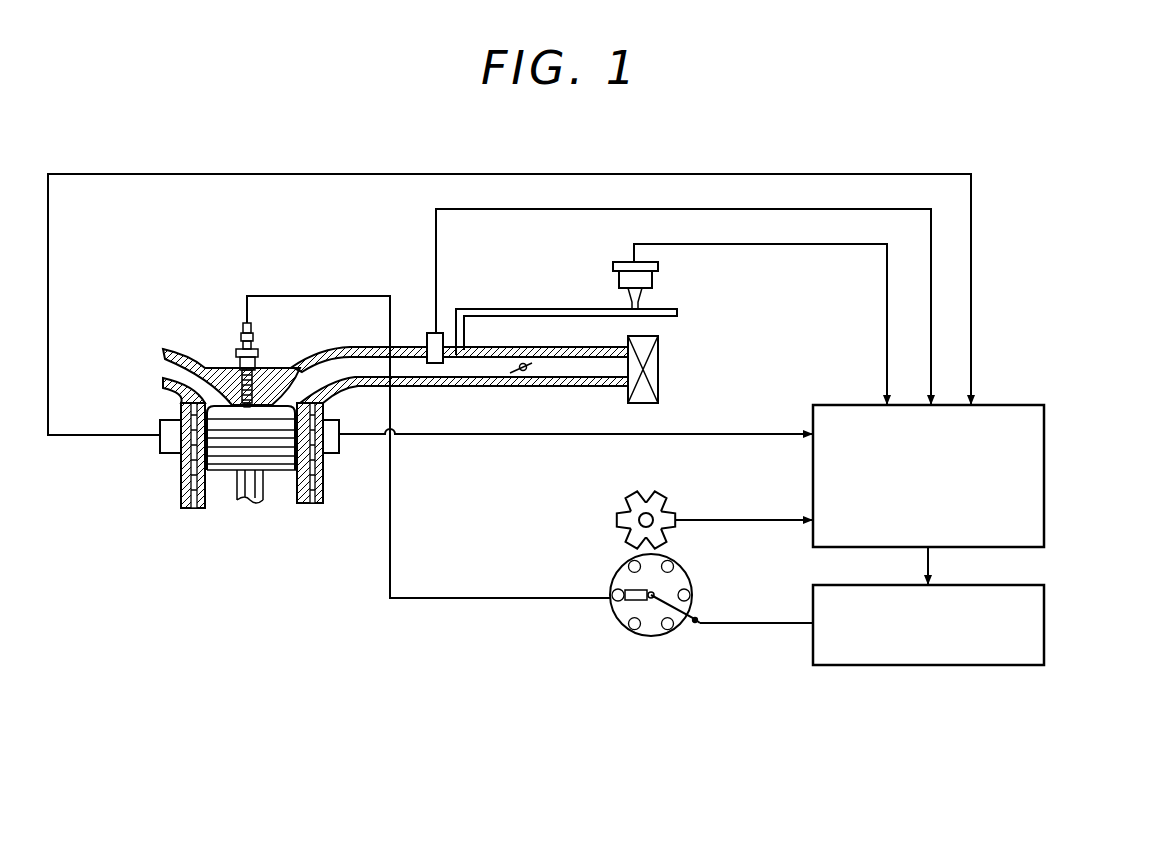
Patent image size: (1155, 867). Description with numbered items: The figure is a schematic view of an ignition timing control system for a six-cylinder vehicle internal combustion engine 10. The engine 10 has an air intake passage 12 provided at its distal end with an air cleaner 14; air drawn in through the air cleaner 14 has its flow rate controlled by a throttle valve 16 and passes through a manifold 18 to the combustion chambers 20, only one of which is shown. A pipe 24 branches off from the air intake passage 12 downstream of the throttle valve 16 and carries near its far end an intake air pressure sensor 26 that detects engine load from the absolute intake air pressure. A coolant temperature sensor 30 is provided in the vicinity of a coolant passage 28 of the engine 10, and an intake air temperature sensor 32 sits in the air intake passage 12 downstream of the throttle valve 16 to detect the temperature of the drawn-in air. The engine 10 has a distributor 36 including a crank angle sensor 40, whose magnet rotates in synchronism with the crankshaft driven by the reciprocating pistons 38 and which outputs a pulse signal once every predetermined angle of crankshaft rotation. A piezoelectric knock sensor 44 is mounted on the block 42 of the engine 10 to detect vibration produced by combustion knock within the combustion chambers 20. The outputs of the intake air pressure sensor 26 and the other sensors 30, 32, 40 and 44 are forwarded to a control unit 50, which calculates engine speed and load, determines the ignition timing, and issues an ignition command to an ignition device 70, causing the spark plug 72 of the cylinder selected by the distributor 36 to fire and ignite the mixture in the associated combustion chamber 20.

The internal combustion engine 10 is at (175, 406).
The air intake passage 12 is at (477, 386).
The air cleaner 14 is at (660, 386).
The throttle valve 16 is at (535, 371).
The manifold 18 is at (314, 358).
The combustion chamber 20 is at (245, 415).
The pipe 24 is at (527, 308).
The intake air pressure sensor 26 is at (616, 262).
The coolant passage 28 is at (325, 496).
The coolant temperature sensor 30 is at (328, 440).
The intake air temperature sensor 32 is at (427, 340).
The distributor 36 is at (617, 610).
The piston 38 is at (285, 477).
The crank angle sensor 40 is at (626, 530).
The block 42 is at (170, 395).
The knock sensor 44 is at (167, 450).
The control unit 50 is at (1044, 452).
The ignition device 70 is at (935, 665).
The spark plug 72 is at (243, 335).